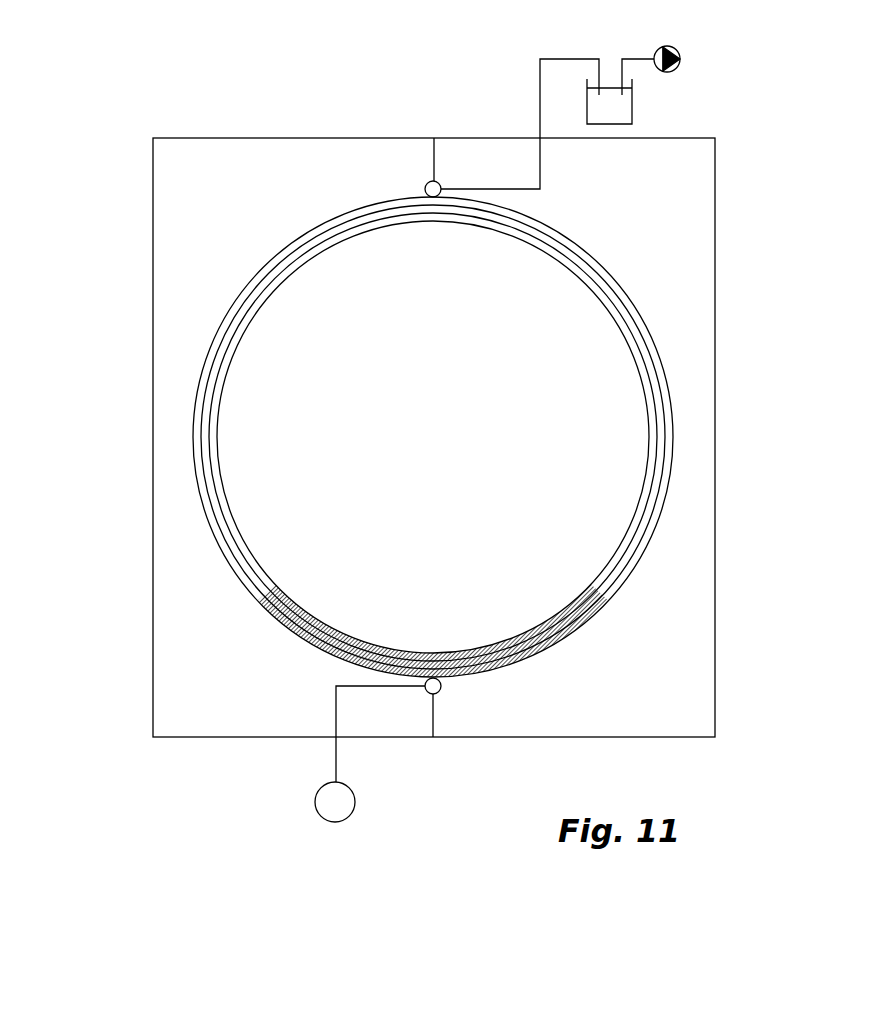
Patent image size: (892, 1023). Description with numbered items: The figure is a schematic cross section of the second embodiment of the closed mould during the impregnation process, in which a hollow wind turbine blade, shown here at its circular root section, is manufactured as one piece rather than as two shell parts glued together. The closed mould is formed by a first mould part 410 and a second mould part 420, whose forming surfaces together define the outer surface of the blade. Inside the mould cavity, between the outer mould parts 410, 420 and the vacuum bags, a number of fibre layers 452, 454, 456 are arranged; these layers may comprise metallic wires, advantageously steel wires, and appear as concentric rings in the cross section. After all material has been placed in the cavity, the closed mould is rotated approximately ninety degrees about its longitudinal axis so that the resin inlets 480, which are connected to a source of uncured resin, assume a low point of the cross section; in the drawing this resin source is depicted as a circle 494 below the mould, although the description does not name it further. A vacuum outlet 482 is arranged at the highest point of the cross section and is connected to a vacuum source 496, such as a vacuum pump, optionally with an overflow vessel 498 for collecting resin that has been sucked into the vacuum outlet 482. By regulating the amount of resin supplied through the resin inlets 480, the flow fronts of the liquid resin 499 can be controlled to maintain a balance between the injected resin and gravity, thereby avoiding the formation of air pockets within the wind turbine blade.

The first mould part 410 is at (707, 387).
The second mould part 420 is at (162, 333).
The fibre layer 452 is at (637, 560).
The fibre layer 454 is at (640, 527).
The fibre layer 456 is at (648, 489).
The liquid resin 499 is at (613, 597).
The resin inlet 480 is at (441, 686).
The vacuum outlet 482 is at (441, 187).
The pump 494 is at (340, 802).
The vacuum source 496 is at (657, 47).
The overflow vessel 498 is at (630, 114).